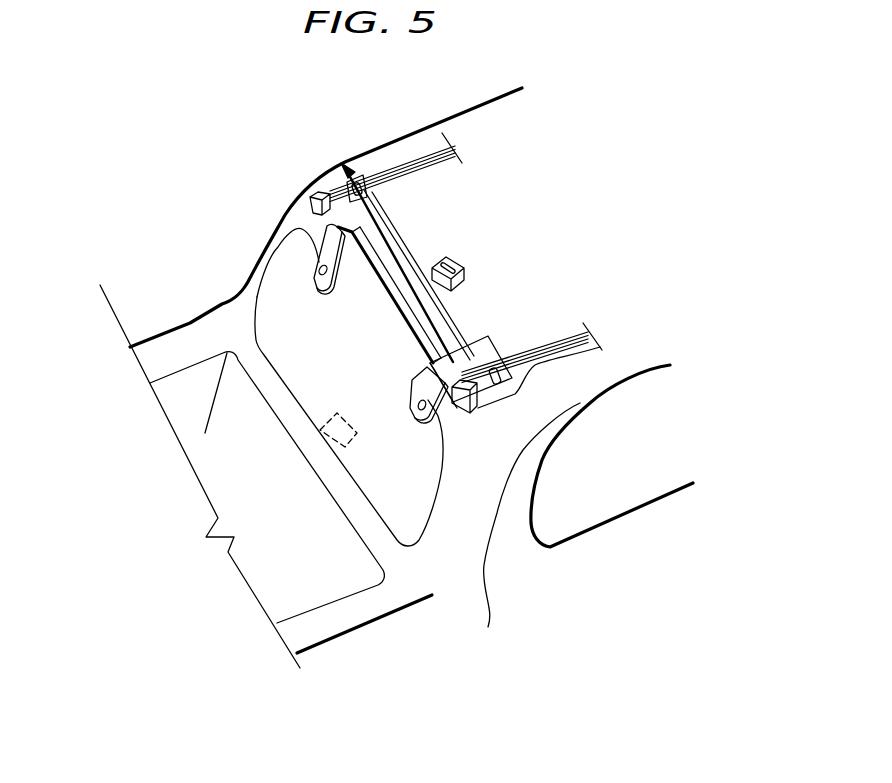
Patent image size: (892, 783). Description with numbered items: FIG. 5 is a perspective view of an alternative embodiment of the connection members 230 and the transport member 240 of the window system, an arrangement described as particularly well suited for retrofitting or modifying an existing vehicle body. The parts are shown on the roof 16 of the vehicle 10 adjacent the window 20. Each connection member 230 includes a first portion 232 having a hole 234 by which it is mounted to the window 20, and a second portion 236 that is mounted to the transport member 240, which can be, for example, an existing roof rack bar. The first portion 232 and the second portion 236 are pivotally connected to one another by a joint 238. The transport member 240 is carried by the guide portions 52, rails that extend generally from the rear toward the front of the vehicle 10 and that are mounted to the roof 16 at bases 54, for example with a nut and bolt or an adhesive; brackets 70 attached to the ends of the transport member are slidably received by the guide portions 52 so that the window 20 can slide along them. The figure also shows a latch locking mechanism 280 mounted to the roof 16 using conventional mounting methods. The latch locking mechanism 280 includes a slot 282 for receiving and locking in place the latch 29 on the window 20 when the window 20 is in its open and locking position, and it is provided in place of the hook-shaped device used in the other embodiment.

The vehicle 10 is at (652, 345).
The roof 16 is at (580, 290).
The window 20 is at (368, 475).
The latch 29 is at (332, 415).
The guide portions 52 is at (413, 152).
The bases 54 is at (468, 403).
The brackets 70 is at (340, 166).
The connection members 230 is at (320, 231).
The first portion 232 is at (318, 258).
The hole 234 is at (318, 267).
The second portion 236 is at (352, 180).
The joint 238 is at (419, 355).
The transport member 240 is at (403, 232).
The latch locking mechanism 280 is at (470, 272).
The slot 282 is at (450, 265).